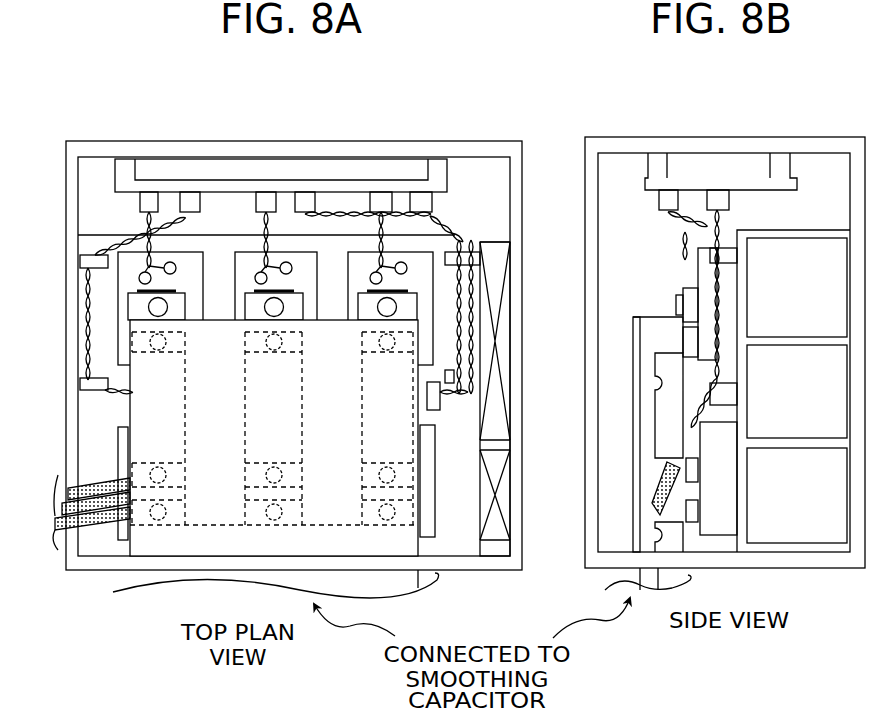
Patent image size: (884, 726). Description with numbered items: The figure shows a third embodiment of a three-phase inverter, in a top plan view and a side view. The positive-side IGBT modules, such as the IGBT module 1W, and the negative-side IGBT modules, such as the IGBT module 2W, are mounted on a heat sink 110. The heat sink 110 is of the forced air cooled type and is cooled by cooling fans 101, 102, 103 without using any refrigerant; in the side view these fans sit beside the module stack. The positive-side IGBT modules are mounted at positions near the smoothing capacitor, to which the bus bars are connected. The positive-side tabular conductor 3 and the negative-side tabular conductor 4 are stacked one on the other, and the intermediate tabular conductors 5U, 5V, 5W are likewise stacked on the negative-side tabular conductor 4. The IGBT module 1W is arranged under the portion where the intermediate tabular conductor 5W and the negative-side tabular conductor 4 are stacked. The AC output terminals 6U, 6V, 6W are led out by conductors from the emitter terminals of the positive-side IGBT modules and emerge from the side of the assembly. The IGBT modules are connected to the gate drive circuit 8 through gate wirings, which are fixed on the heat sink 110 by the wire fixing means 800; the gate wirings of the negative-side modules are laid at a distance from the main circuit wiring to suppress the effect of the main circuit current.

In FIG. 8A, the gate drive circuit 8 is at (263, 172).
In FIG. 8B, the gate drive circuit 8 is at (720, 168).
In FIG. 8A, the wire fixing means 800 is at (80, 263).
In FIG. 8A, the heat sink 110 is at (102, 422).
In FIG. 8A, the AC output terminal 6U is at (100, 488).
In FIG. 8A, the AC output terminal 6V is at (95, 520).
In FIG. 8A, the AC output terminal 6W is at (106, 535).
In FIG. 8A, the intermediate tabular conductor 5U is at (160, 319).
In FIG. 8A, the intermediate tabular conductor 5V is at (276, 319).
In FIG. 8A, the intermediate tabular conductor 5W is at (390, 319).
In FIG. 8B, the intermediate tabular conductor 5W is at (655, 374).
In FIG. 8B, the negative-side IGBT module 2W is at (705, 283).
In FIG. 8B, the negative-side tabular conductor 4 is at (635, 435).
In FIG. 8B, the positive-side IGBT module 1W is at (707, 483).
In FIG. 8B, the positive-side tabular conductor 3 is at (655, 530).
In FIG. 8B, the cooling fan 101 is at (797, 287).
In FIG. 8B, the cooling fan 102 is at (797, 391).
In FIG. 8B, the cooling fan 103 is at (797, 495).